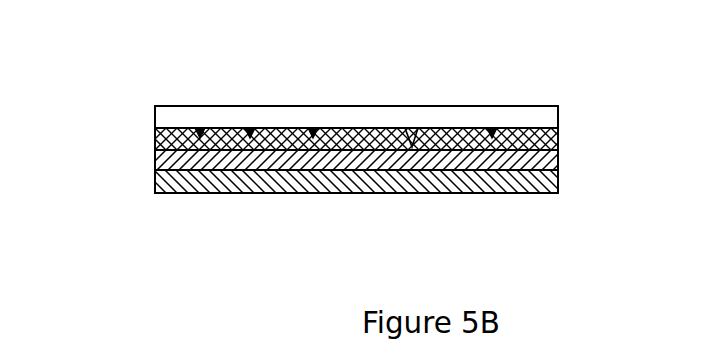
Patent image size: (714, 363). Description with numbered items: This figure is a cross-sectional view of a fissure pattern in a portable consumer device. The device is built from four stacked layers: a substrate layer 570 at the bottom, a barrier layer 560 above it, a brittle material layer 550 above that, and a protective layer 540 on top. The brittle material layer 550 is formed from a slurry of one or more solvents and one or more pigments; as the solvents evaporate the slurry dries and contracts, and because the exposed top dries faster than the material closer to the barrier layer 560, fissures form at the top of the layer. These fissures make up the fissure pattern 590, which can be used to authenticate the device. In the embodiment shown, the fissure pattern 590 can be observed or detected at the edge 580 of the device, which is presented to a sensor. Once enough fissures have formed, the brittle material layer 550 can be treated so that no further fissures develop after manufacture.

The protective layer 540 is at (558, 108).
The brittle material layer 550 is at (558, 130).
The barrier layer 560 is at (558, 157).
The substrate layer 570 is at (558, 182).
The edge 580 is at (147, 152).
The fissure pattern 590 is at (412, 134).